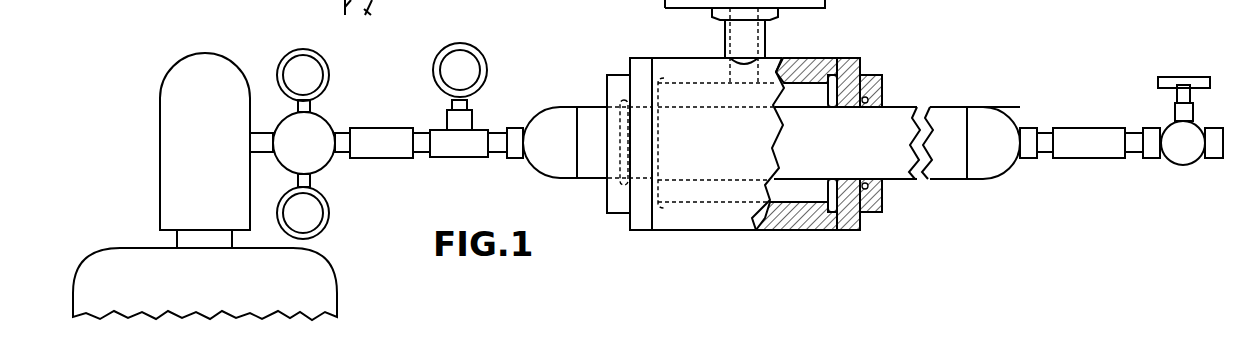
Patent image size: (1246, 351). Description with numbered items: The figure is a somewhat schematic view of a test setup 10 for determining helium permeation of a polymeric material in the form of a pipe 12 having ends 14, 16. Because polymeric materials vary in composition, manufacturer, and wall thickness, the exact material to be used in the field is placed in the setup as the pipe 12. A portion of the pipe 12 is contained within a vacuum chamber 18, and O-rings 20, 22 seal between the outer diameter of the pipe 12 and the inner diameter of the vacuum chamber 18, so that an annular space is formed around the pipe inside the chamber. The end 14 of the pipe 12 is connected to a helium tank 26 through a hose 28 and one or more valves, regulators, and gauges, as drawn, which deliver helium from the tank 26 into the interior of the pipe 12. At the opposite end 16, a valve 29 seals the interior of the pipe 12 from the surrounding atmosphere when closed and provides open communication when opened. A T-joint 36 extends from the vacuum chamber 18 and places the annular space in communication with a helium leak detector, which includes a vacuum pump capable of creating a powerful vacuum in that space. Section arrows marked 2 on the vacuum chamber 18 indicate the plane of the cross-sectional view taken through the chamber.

The test setup 10 is at (995, 196).
The pipe 12 is at (796, 146).
The end 14 is at (586, 107).
The end 16 is at (948, 107).
The vacuum chamber 18 is at (735, 231).
The O-ring 20 is at (866, 110).
The O-ring 22 is at (612, 168).
The helium tank 26 is at (328, 264).
The hose 28 is at (383, 128).
The valve 29 is at (1183, 77).
The T-joint 36 is at (766, 32).
The section line 2- 2 is at (640, 30).